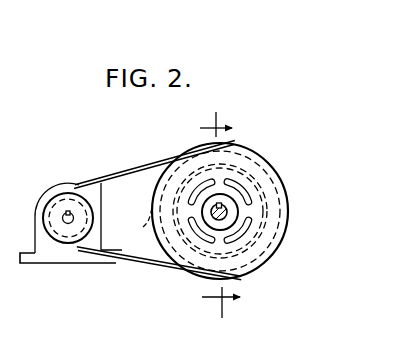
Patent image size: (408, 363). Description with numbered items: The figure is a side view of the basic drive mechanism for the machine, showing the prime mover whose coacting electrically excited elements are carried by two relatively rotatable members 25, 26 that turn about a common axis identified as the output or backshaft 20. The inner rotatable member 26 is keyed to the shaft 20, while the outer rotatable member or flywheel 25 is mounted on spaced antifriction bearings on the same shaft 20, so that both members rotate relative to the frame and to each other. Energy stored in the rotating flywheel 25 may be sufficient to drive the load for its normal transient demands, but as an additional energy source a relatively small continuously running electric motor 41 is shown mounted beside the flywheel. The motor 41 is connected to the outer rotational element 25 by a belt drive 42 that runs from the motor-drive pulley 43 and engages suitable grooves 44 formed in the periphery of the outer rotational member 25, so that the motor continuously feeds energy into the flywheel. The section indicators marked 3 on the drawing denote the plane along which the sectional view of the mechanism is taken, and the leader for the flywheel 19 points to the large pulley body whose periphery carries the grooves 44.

The driven pulley 19 is at (262, 151).
The output or backshaft 20 is at (226, 220).
The outer rotatable member or flywheel 25 is at (170, 245).
The inner rotatable member 26 is at (194, 245).
The electric motor 41 is at (48, 266).
The belt drive 42 is at (122, 176).
The motor-drive pulley 43 is at (91, 213).
The grooves 44 is at (151, 224).
The section line FIG. 3 is at (220, 217).